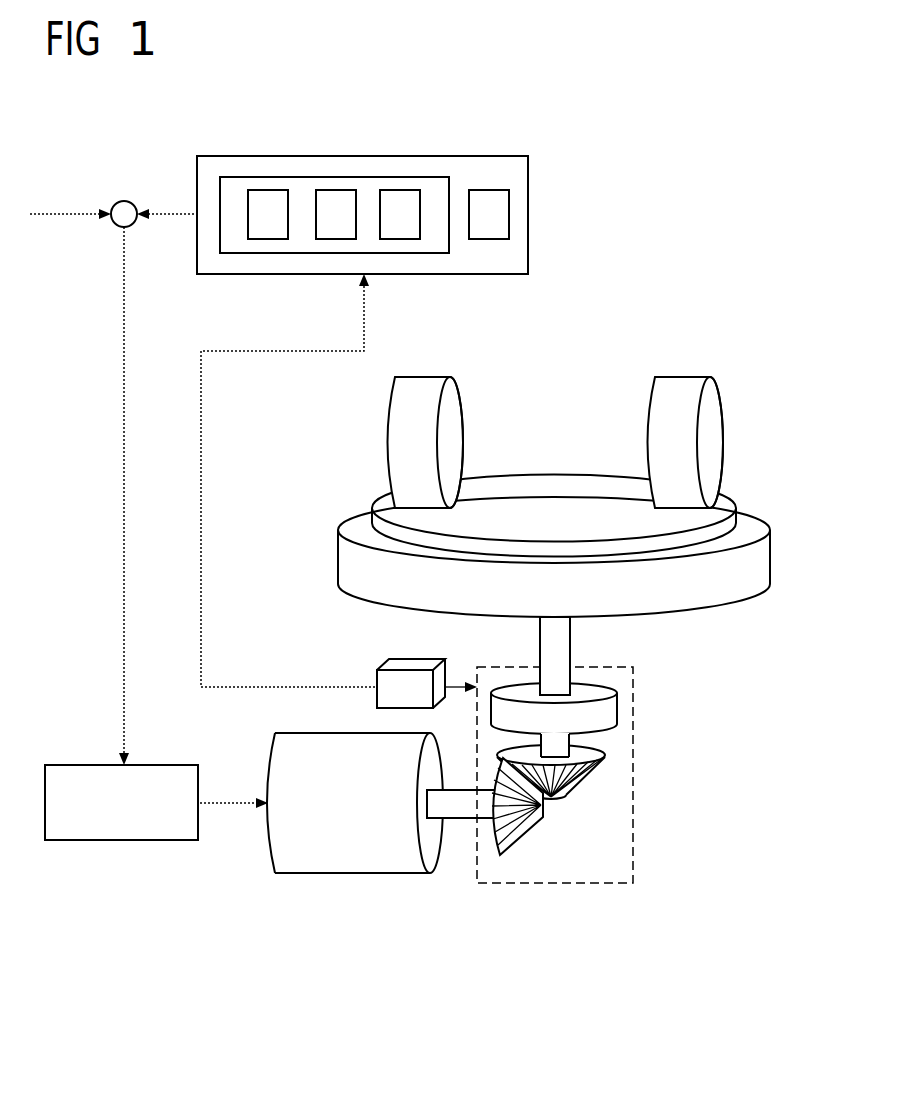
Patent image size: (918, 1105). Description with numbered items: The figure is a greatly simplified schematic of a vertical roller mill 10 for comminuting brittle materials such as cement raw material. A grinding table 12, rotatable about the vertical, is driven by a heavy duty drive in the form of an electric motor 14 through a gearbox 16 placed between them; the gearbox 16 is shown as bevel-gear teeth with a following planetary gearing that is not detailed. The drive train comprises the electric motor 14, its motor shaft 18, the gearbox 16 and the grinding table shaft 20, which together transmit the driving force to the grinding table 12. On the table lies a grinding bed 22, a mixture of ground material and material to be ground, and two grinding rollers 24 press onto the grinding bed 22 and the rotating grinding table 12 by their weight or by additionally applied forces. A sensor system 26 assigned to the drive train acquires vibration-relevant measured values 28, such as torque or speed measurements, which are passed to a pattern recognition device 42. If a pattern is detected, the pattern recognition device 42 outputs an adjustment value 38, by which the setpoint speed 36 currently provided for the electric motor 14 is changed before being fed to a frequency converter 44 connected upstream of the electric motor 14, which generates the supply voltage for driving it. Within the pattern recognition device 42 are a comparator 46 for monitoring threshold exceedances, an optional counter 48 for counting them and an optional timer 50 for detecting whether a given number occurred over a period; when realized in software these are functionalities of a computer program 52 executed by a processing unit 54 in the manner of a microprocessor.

The vertical roller mill 10 is at (669, 349).
The grinding table 12 is at (760, 558).
The electric motor 14 is at (355, 866).
The gearbox 16 is at (597, 750).
The motor shaft 18 is at (458, 812).
The grinding table shaft 20 is at (560, 645).
The grinding bed 22 is at (728, 528).
The grinding roller 24 is at (452, 446).
The sensor system 26 is at (389, 659).
The measured values 28 is at (252, 351).
The setpoint speed 36 is at (123, 418).
The adjustment value 38 is at (183, 212).
The pattern recognition device 42 is at (505, 156).
The frequency converter 44 is at (118, 842).
The comparator 46 is at (402, 190).
The counter 48 is at (340, 190).
The timer 50 is at (274, 190).
The computer program 52 is at (237, 176).
The processing unit 54 is at (509, 213).